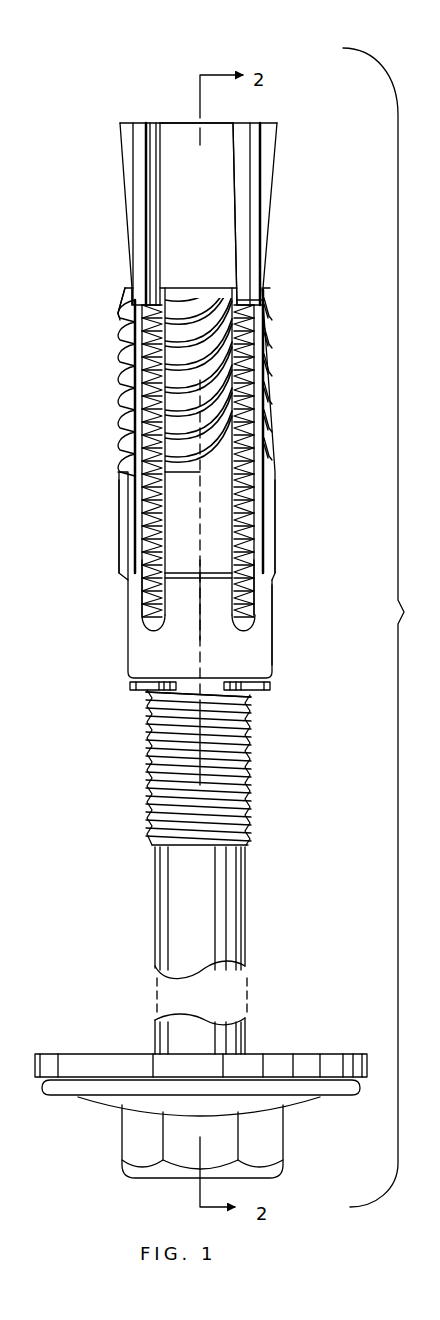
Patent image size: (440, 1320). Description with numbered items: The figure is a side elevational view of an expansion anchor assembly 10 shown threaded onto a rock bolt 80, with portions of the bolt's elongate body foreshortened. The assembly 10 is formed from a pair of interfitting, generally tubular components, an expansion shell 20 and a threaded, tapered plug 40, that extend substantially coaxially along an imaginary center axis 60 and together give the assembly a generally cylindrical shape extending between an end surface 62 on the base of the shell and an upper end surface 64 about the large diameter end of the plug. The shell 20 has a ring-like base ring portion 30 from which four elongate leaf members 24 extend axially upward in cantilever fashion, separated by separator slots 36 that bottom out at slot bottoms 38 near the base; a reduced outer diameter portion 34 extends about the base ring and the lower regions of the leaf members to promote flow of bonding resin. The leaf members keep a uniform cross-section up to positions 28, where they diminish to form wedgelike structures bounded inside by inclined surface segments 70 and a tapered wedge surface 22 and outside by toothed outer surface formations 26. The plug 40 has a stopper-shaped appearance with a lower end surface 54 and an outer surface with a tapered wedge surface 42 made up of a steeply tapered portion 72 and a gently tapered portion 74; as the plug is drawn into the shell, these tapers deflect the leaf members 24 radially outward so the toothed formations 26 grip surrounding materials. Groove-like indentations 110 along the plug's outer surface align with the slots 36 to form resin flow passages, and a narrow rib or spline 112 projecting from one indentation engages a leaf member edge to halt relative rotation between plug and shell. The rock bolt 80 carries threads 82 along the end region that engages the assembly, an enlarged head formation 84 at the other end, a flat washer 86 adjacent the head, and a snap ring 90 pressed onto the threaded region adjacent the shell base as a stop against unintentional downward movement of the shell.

The expansion anchor assembly 10 is at (114, 70).
The expansion shell 20 is at (290, 475).
The tapered wedge surface 22 is at (248, 348).
The leaf members 24 is at (120, 518).
The toothed outer surface formations 26 is at (208, 312).
The leaf transition positions 28 is at (112, 478).
The base ring portion 30 is at (278, 670).
The reduced outer diameter portion 34 is at (263, 636).
The separator slots 36 is at (265, 560).
The slot bottoms 38 is at (250, 612).
The tapered plug 40 is at (282, 172).
The tapered wedge surface 42 is at (268, 243).
The lower end surface 54 is at (133, 322).
The center axis 60 is at (212, 632).
The end surface 62 is at (153, 753).
The upper end surface 64 is at (228, 121).
The inclined surface segments 70 is at (255, 313).
The steeply tapered surface portion 72 is at (130, 270).
The gently tapered surface portion 74 is at (120, 160).
The rock bolt 80 is at (262, 765).
The threads 82 is at (245, 813).
The head formation 84 is at (270, 1140).
The flat washer 86 is at (92, 1050).
The snap ring 90 is at (138, 695).
The groove-like indentations 110 is at (155, 188).
The rib or spline 112 is at (140, 228).